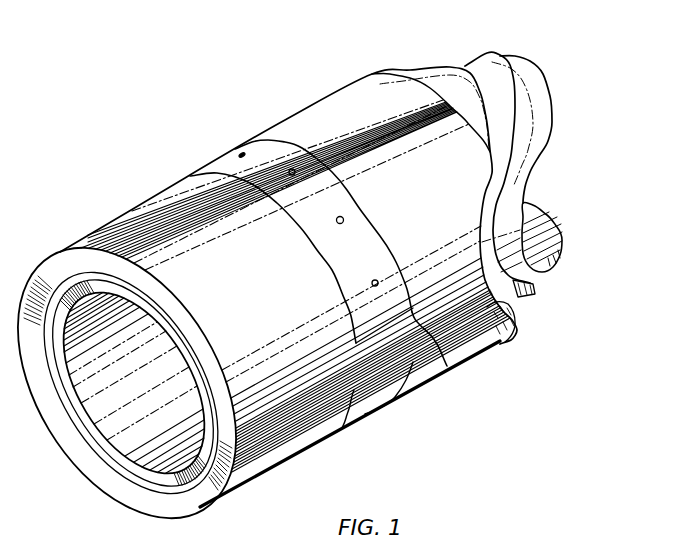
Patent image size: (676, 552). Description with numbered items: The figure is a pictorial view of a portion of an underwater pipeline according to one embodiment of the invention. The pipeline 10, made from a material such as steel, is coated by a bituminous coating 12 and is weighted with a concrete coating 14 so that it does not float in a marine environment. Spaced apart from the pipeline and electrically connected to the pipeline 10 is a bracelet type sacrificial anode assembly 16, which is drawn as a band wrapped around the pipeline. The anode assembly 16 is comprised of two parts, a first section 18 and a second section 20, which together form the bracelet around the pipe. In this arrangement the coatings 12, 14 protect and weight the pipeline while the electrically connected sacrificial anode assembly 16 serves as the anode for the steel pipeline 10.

The pipeline 10 is at (508, 58).
The bituminous coating 12 is at (446, 66).
The concrete coating 14 is at (378, 77).
The bracelet type sacrificial anode assembly 16 is at (229, 157).
The first section 18 is at (447, 367).
The second section 20 is at (355, 415).